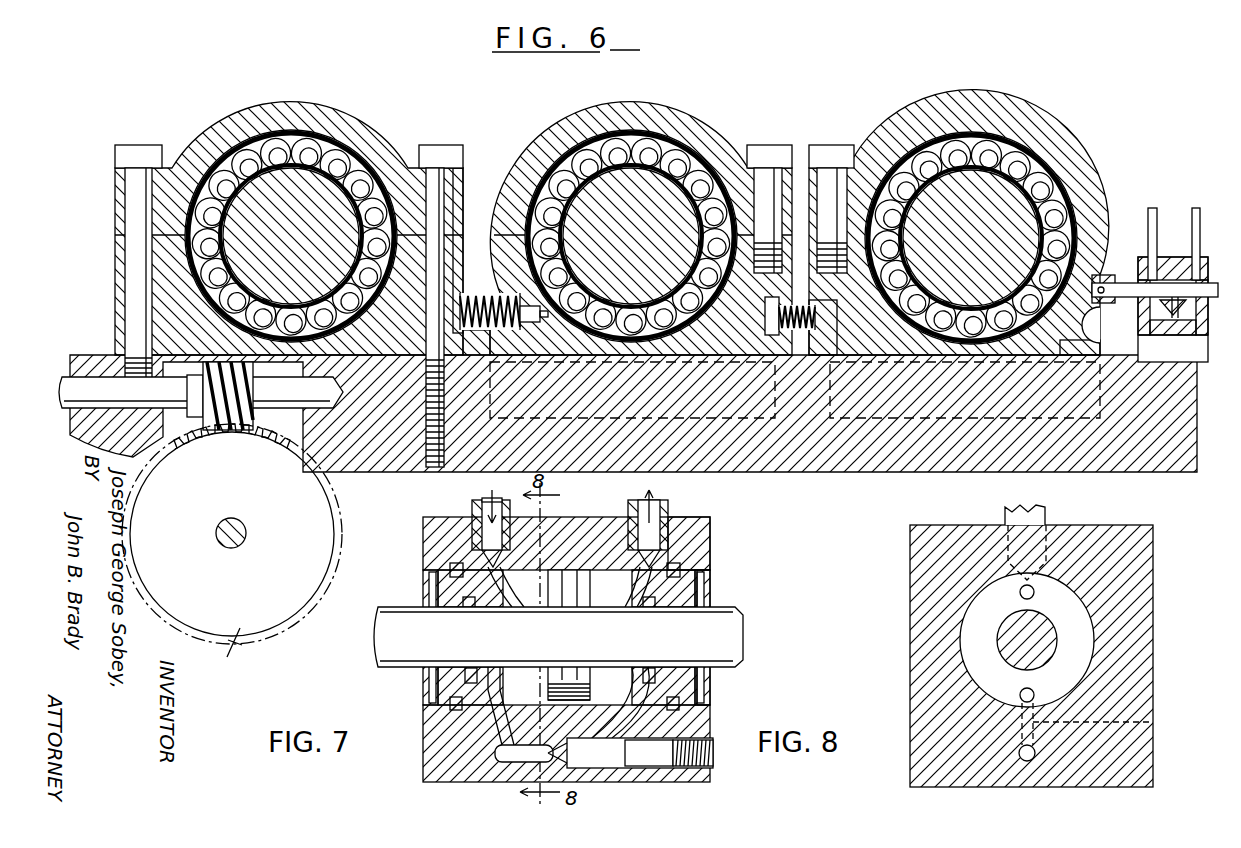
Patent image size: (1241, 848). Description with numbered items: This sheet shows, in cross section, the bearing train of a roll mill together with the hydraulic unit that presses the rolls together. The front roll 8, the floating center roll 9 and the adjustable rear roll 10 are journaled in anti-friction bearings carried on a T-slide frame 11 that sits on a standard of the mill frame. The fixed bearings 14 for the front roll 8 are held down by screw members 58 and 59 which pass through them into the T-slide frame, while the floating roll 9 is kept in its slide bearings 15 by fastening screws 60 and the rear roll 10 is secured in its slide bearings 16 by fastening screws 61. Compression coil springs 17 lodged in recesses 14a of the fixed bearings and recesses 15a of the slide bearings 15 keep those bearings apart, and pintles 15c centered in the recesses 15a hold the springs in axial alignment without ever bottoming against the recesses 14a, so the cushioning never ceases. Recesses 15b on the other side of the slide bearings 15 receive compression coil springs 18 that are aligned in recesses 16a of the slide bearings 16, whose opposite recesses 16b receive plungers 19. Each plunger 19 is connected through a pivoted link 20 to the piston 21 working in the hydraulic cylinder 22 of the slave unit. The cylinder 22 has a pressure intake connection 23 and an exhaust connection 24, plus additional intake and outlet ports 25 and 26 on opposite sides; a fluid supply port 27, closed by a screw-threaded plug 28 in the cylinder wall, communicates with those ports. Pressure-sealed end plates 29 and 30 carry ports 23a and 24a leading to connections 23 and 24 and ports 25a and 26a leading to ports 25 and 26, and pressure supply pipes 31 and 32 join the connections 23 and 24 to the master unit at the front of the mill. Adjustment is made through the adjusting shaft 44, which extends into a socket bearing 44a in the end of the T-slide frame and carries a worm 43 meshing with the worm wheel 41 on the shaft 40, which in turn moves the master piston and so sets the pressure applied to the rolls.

In FIG. 6, the front roll 8 is at (300, 155).
In FIG. 6, the floating center roll 9 is at (650, 185).
In FIG. 6, the adjustable rear roll 10 is at (1035, 170).
In FIG. 6, the T-slide frame 11 is at (915, 470).
In FIG. 6, the fixed bearing 14 is at (165, 306).
In FIG. 6, the recess 14a is at (470, 245).
In FIG. 6, the slide bearing 15 is at (791, 168).
In FIG. 6, the recess 15a is at (546, 329).
In FIG. 6, the recess 15b is at (758, 309).
In FIG. 6, the pintle 15c is at (578, 332).
In FIG. 6, the slide bearing 16 is at (955, 122).
In FIG. 6, the recess 16a is at (846, 327).
In FIG. 6, the recess 16b is at (1069, 339).
In FIG. 6, the compression coil spring 17 is at (466, 296).
In FIG. 6, the compression coil spring 18 is at (780, 325).
In FIG. 6, the plunger 19 is at (1100, 275).
In FIG. 6, the pivoted link 20 is at (1122, 283).
In FIG. 7, the pivoted link 20 is at (400, 660).
In FIG. 8, the pivoted link 20 is at (1045, 648).
In FIG. 6, the piston 21 is at (1174, 270).
In FIG. 7, the piston 21 is at (575, 625).
In FIG. 7, the hydraulic cylinder 22 is at (575, 503).
In FIG. 8, the hydraulic cylinder 22 is at (1150, 565).
In FIG. 7, the pressure intake connection 23 is at (465, 548).
In FIG. 7, the port 23a is at (512, 600).
In FIG. 7, the exhaust connection 24 is at (712, 545).
In FIG. 7, the port 24a is at (628, 590).
In FIG. 7, the intake port 25 is at (495, 752).
In FIG. 8, the intake port 25 is at (1103, 720).
In FIG. 7, the port 25a is at (470, 655).
In FIG. 8, the port 25a is at (1035, 695).
In FIG. 7, the outlet port 26 is at (622, 738).
In FIG. 7, the port 26a is at (665, 700).
In FIG. 7, the fluid supply port 27 is at (430, 780).
In FIG. 8, the fluid supply port 27 is at (1036, 755).
In FIG. 7, the screw-threaded plug 28 is at (712, 760).
In FIG. 6, the end plate 29 is at (1138, 312).
In FIG. 7, the end plate 29 is at (445, 692).
In FIG. 6, the end plate 30 is at (1205, 258).
In FIG. 7, the end plate 30 is at (703, 680).
In FIG. 6, the pressure supply pipe 31 is at (1150, 210).
In FIG. 7, the pressure supply pipe 31 is at (478, 512).
In FIG. 8, the pressure supply pipe 31 is at (1047, 513).
In FIG. 6, the pressure supply pipe 32 is at (1197, 210).
In FIG. 7, the pressure supply pipe 32 is at (665, 512).
In FIG. 6, the shaft 40 is at (240, 548).
In FIG. 6, the worm wheel 41 is at (232, 659).
In FIG. 6, the worm 43 is at (238, 362).
In FIG. 6, the adjusting shaft 44 is at (90, 400).
In FIG. 6, the socket bearing 44a is at (232, 534).
In FIG. 6, the screw member 58 is at (145, 165).
In FIG. 6, the screw member 59 is at (445, 165).
In FIG. 6, the fastening screw 60 is at (767, 215).
In FIG. 6, the fastening screw 61 is at (830, 175).